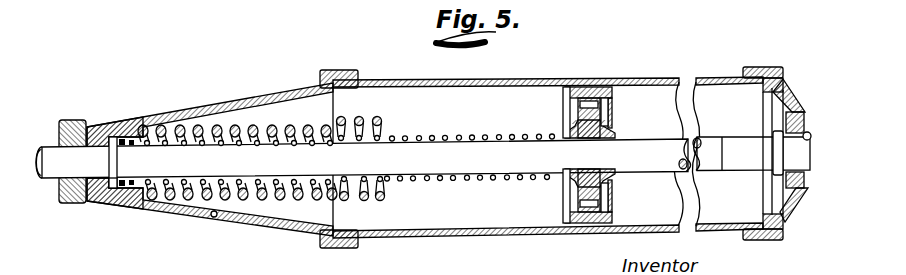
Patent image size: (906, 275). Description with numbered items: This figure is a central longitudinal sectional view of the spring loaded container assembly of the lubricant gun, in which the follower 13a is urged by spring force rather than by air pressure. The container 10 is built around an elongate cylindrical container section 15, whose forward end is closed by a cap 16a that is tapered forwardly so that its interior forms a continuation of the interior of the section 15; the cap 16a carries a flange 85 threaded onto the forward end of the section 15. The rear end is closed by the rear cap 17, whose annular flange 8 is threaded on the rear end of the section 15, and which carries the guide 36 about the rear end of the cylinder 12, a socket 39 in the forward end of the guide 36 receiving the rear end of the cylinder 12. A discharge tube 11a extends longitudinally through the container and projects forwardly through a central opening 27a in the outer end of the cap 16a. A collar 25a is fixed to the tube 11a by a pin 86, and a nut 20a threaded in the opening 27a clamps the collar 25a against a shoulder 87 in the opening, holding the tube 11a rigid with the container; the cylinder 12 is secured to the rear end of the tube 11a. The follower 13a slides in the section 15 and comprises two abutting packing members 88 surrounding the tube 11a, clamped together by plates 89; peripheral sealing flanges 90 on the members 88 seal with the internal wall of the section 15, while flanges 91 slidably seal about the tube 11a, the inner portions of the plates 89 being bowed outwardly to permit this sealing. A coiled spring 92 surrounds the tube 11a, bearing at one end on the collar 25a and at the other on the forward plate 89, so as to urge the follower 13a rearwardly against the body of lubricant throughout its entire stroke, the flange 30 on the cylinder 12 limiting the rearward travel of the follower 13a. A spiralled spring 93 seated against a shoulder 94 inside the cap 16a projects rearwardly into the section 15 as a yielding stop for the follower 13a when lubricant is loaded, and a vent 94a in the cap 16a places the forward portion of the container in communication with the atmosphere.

The annular flange 8 is at (756, 66).
The container 10 is at (522, 78).
The discharge tube 11a is at (433, 148).
The cylinder 12 is at (747, 133).
The follower 13a is at (566, 107).
The container section 15 is at (494, 79).
The cap 16a is at (266, 96).
The rear cap 17 is at (791, 84).
The nut 20a is at (74, 205).
The collar 25a is at (363, 159).
The central opening 27a is at (128, 124).
The flange 30 is at (772, 152).
The guide 36 is at (802, 113).
The socket 39 is at (808, 133).
The flange 85 is at (343, 72).
The pin 86 is at (112, 163).
The shoulder 87 is at (113, 190).
The packing members 88 is at (586, 224).
The plates 89 is at (600, 197).
The peripheral sealing flanges 90 is at (577, 86).
The flanges 91 is at (580, 139).
The coiled spring 92 is at (453, 183).
The spiralled spring 93 is at (377, 118).
The shoulder 94 is at (144, 206).
The vent 94a is at (213, 218).